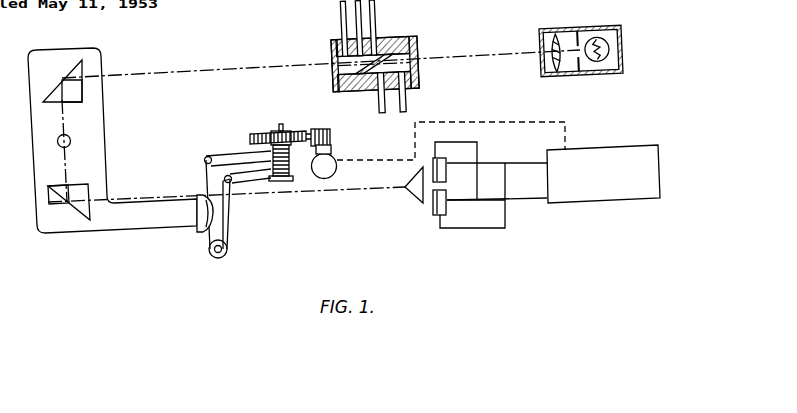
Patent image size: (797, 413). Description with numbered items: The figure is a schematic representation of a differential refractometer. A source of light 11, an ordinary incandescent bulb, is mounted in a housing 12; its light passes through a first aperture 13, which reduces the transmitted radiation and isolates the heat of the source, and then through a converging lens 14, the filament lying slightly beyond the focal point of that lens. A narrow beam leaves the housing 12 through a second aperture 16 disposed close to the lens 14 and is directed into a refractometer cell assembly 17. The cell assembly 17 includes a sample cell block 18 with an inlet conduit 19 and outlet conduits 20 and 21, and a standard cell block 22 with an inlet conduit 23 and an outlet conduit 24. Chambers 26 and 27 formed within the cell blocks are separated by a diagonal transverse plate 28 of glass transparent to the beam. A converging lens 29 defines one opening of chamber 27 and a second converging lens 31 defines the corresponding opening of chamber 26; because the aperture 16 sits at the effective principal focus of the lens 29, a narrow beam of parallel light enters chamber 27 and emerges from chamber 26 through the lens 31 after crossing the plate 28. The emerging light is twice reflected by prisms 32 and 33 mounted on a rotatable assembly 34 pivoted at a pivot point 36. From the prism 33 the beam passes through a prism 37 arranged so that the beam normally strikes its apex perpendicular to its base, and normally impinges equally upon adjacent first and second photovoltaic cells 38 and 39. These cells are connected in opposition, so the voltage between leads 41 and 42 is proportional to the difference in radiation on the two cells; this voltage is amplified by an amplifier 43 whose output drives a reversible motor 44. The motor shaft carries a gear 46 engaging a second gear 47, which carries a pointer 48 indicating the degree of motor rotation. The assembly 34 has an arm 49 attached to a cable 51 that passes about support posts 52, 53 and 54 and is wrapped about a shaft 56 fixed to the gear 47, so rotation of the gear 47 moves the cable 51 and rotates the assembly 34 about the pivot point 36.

The source of light 11 is at (604, 61).
The housing 12 is at (623, 42).
The first aperture 13 is at (577, 69).
The converging lens 14 is at (579, 30).
The second aperture 16 is at (544, 52).
The refractometer cell assembly 17 is at (419, 28).
The sample cell block 18 is at (342, 39).
The inlet conduit 19 is at (343, 11).
The outlet conduit 20 is at (364, 26).
The outlet conduit 21 is at (378, 13).
The standard cell block 22 is at (370, 89).
The inlet conduit 23 is at (405, 100).
The outlet conduit 24 is at (377, 106).
The chamber 26 is at (352, 58).
The chamber 27 is at (393, 65).
The diagonal transverse plate 28 is at (419, 50).
The converging lens 29 is at (423, 53).
The converging lens 31 is at (332, 68).
The prism 32 is at (52, 87).
The prism 33 is at (56, 203).
The rotatable assembly 34 is at (69, 240).
The pivot point 36 is at (61, 134).
The prism 37 is at (409, 193).
The first photovoltaic cell 38 is at (448, 162).
The second photovoltaic cell 39 is at (451, 217).
The lead 41 is at (523, 161).
The lead 42 is at (532, 199).
The amplifier 43 is at (637, 203).
The reversible motor 44 is at (337, 167).
The gear 46 is at (333, 136).
The second gear 47 is at (256, 134).
The pointer 48 is at (296, 128).
The arm 49 is at (158, 228).
The cable 51 is at (228, 218).
The support post 52 is at (228, 256).
The support post 53 is at (203, 161).
The support post 54 is at (224, 181).
The shaft 56 is at (290, 181).